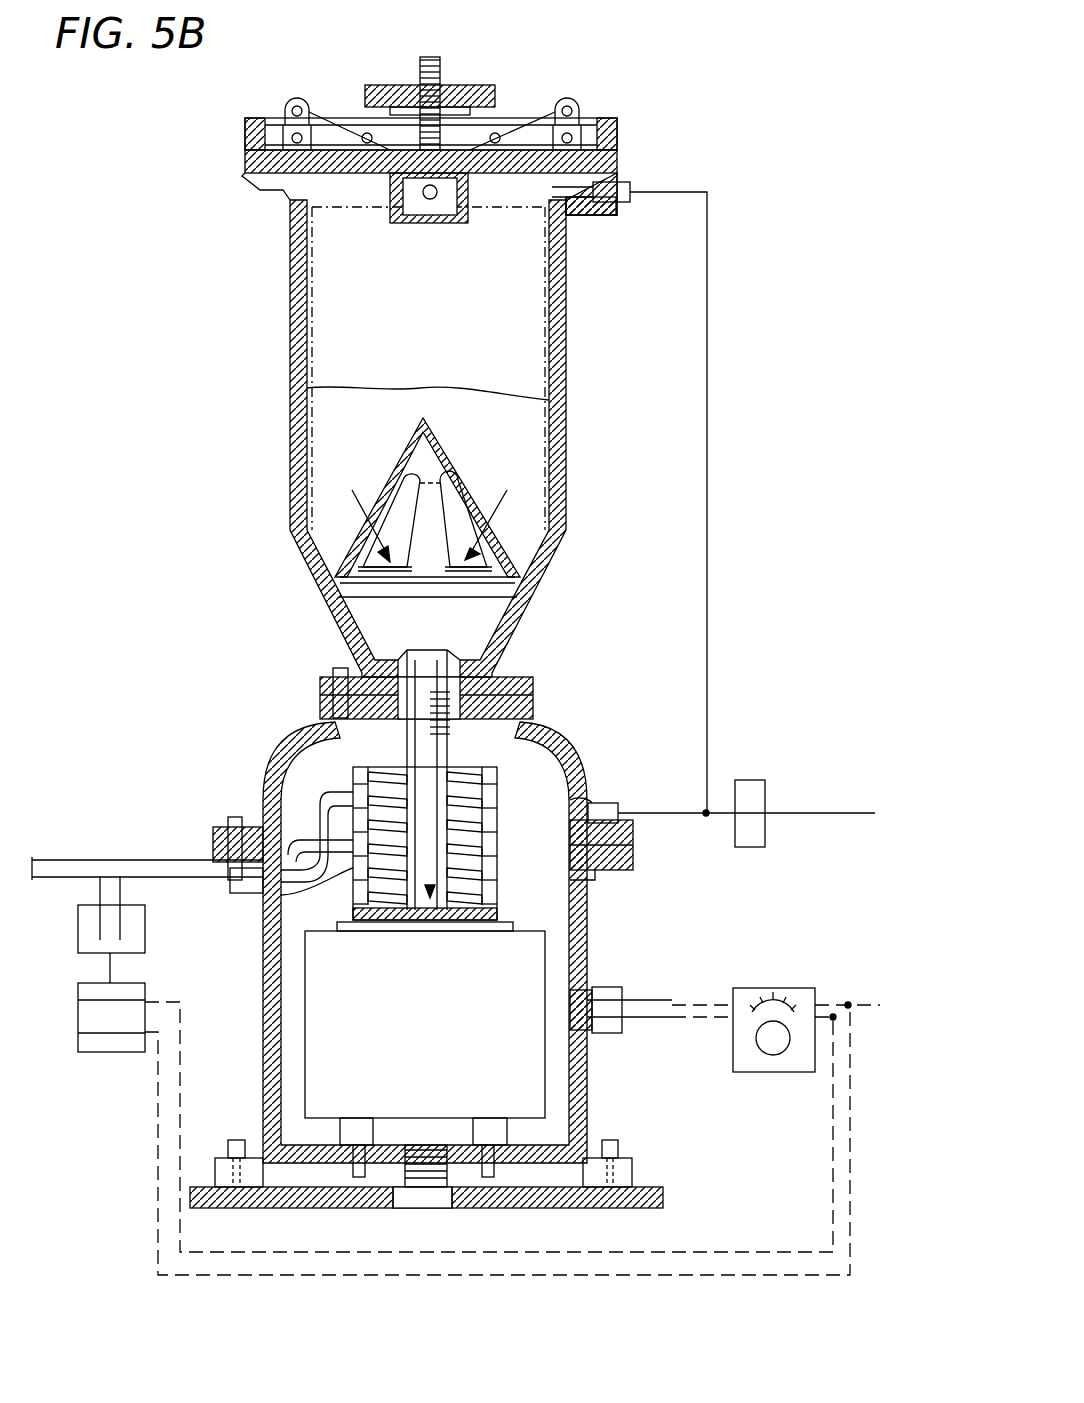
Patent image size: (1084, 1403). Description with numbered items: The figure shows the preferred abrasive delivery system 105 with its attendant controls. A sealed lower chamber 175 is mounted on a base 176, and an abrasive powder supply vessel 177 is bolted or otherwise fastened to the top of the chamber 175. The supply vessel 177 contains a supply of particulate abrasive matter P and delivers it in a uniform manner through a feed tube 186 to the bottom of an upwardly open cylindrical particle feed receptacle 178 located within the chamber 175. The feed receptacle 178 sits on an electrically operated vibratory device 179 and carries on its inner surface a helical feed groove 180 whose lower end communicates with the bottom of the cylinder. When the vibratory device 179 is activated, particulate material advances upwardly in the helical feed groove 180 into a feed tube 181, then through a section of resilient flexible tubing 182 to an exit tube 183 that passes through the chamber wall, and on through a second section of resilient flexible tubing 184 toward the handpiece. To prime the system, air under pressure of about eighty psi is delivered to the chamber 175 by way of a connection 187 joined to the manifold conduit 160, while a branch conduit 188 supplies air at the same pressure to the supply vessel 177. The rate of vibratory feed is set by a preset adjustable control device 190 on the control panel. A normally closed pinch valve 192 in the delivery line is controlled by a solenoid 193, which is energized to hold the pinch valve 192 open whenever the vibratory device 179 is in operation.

The abrasive delivery system 105 is at (722, 214).
The manifold conduit 160 is at (790, 813).
The sealed lower chamber 175 is at (588, 930).
The base 176 is at (660, 1206).
The abrasive powder supply vessel 177 is at (290, 250).
The cylindrical particle feed receptacle 178 is at (500, 778).
The vibratory device 179 is at (547, 1085).
The helical feed groove 180 is at (353, 772).
The feed tube 181 is at (340, 810).
The resilient flexible tubing 182 is at (318, 798).
The exit tube 183 is at (282, 905).
The resilient flexible tubing 184 is at (70, 857).
The feed tube 186 is at (448, 745).
The connection 187 is at (618, 805).
The branch conduit 188 is at (707, 360).
The preset adjustable control device 190 is at (780, 988).
The pinch valve 192 is at (145, 935).
The solenoid 193 is at (78, 1025).
The particulate abrasive matter P is at (525, 440).